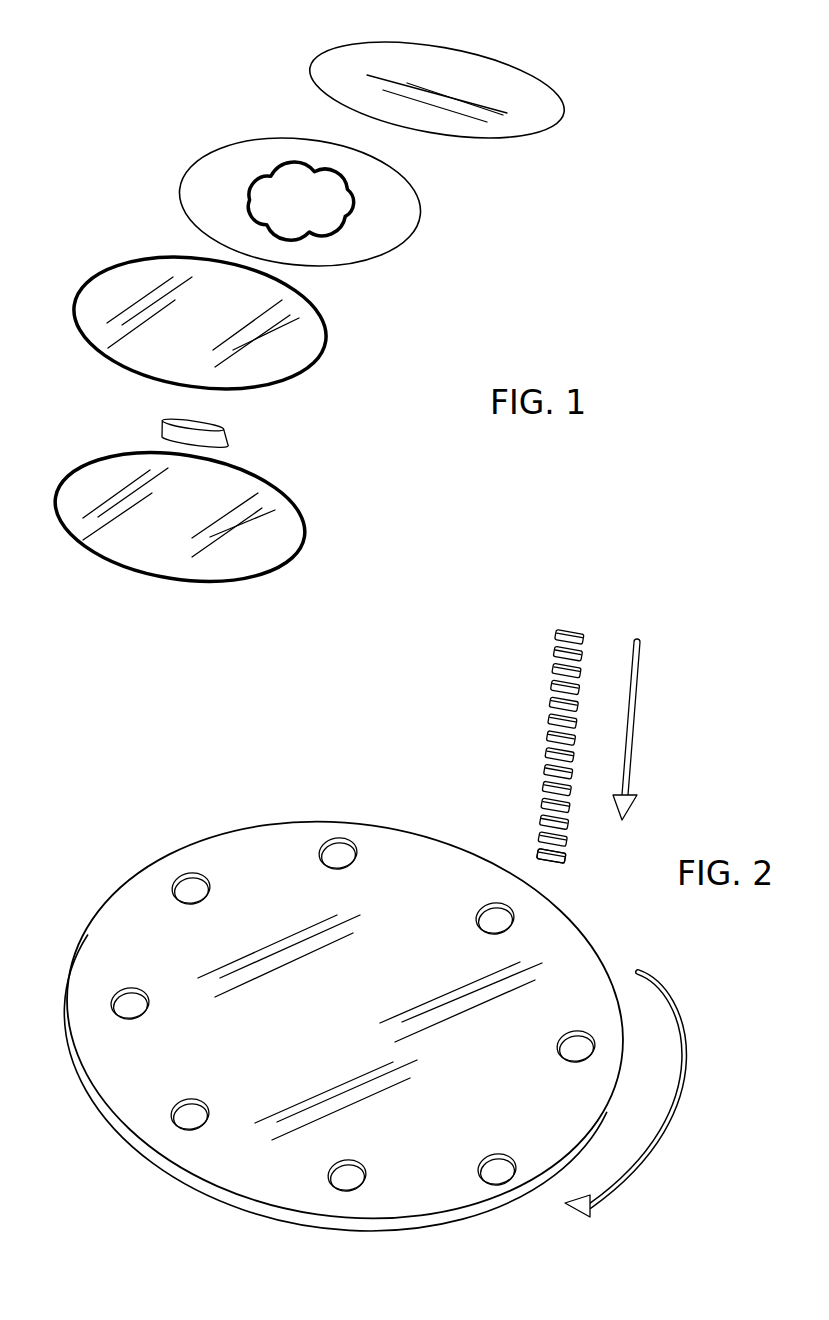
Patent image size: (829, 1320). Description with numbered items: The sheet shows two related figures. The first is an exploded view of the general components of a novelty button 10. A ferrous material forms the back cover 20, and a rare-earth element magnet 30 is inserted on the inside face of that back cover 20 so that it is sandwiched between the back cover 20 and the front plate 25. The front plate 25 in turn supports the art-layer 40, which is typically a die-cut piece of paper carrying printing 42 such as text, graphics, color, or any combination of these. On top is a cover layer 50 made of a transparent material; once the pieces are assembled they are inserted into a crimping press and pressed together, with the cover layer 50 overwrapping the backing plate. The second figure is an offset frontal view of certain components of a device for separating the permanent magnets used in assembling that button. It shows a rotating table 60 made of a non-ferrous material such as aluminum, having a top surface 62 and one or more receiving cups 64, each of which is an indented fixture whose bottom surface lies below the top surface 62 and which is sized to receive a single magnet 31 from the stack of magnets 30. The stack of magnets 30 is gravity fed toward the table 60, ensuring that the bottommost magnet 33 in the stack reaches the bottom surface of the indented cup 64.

In FIG. 1, the novelty button 10 is at (372, 534).
In FIG. 1, the back cover 20 is at (278, 543).
In FIG. 1, the front plate 25 is at (313, 348).
In FIG. 1, the rare-earth element magnet 30 is at (183, 432).
In FIG. 2, the rare-earth element magnet 30 is at (553, 683).
In FIG. 2, the single magnet 31 is at (565, 840).
In FIG. 2, the bottommost magnet 33 is at (558, 858).
In FIG. 1, the art-layer 40 is at (387, 217).
In FIG. 1, the printing 42 is at (305, 183).
In FIG. 1, the cover layer 50 is at (490, 90).
In FIG. 2, the rotating table 60 is at (120, 746).
In FIG. 2, the top surface 62 is at (262, 877).
In FIG. 2, the receiving cup 64 is at (190, 890).